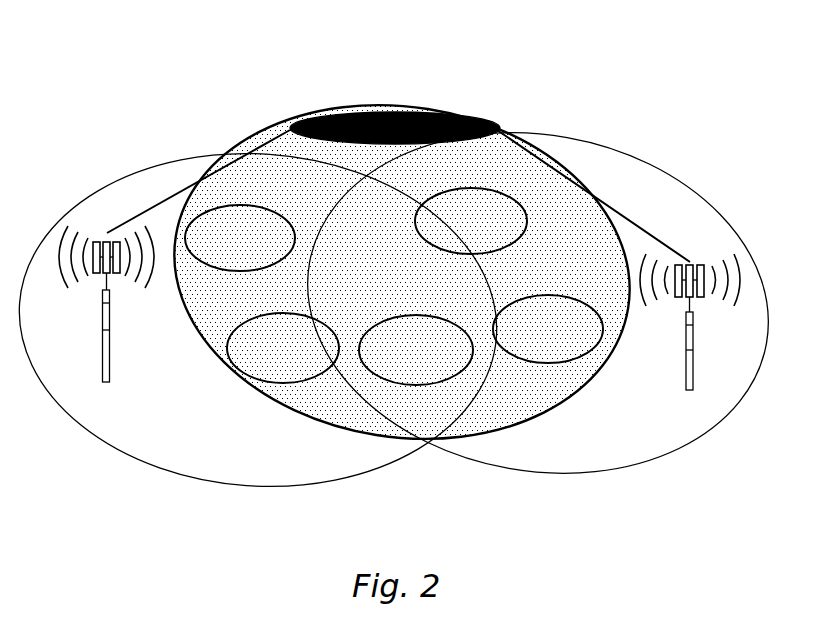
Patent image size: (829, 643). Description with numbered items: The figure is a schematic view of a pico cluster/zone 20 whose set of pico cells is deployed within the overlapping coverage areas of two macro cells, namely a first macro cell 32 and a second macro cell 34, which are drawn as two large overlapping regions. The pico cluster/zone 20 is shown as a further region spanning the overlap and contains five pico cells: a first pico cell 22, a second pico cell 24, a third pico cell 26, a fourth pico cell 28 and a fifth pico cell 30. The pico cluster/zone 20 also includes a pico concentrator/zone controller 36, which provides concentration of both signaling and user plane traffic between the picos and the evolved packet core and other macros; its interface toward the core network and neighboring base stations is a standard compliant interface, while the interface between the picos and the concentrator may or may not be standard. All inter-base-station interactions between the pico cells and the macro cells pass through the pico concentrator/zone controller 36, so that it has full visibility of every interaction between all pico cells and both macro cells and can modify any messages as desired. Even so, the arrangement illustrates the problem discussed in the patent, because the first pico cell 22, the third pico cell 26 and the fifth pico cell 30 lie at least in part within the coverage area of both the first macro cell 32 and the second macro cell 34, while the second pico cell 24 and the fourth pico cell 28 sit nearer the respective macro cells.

The pico cluster/zone 20 is at (394, 413).
The pico cell (P1) 22 is at (450, 367).
The pico cell (P2) 24 is at (235, 222).
The pico cell (P3) 26 is at (502, 203).
The pico cell (P4) 28 is at (577, 348).
The pico cell (P5) 30 is at (270, 368).
The macro cell (M1) 32 is at (128, 437).
The macro cell (M2) 34 is at (708, 413).
The pico concentrator/zone controller 36 is at (403, 112).